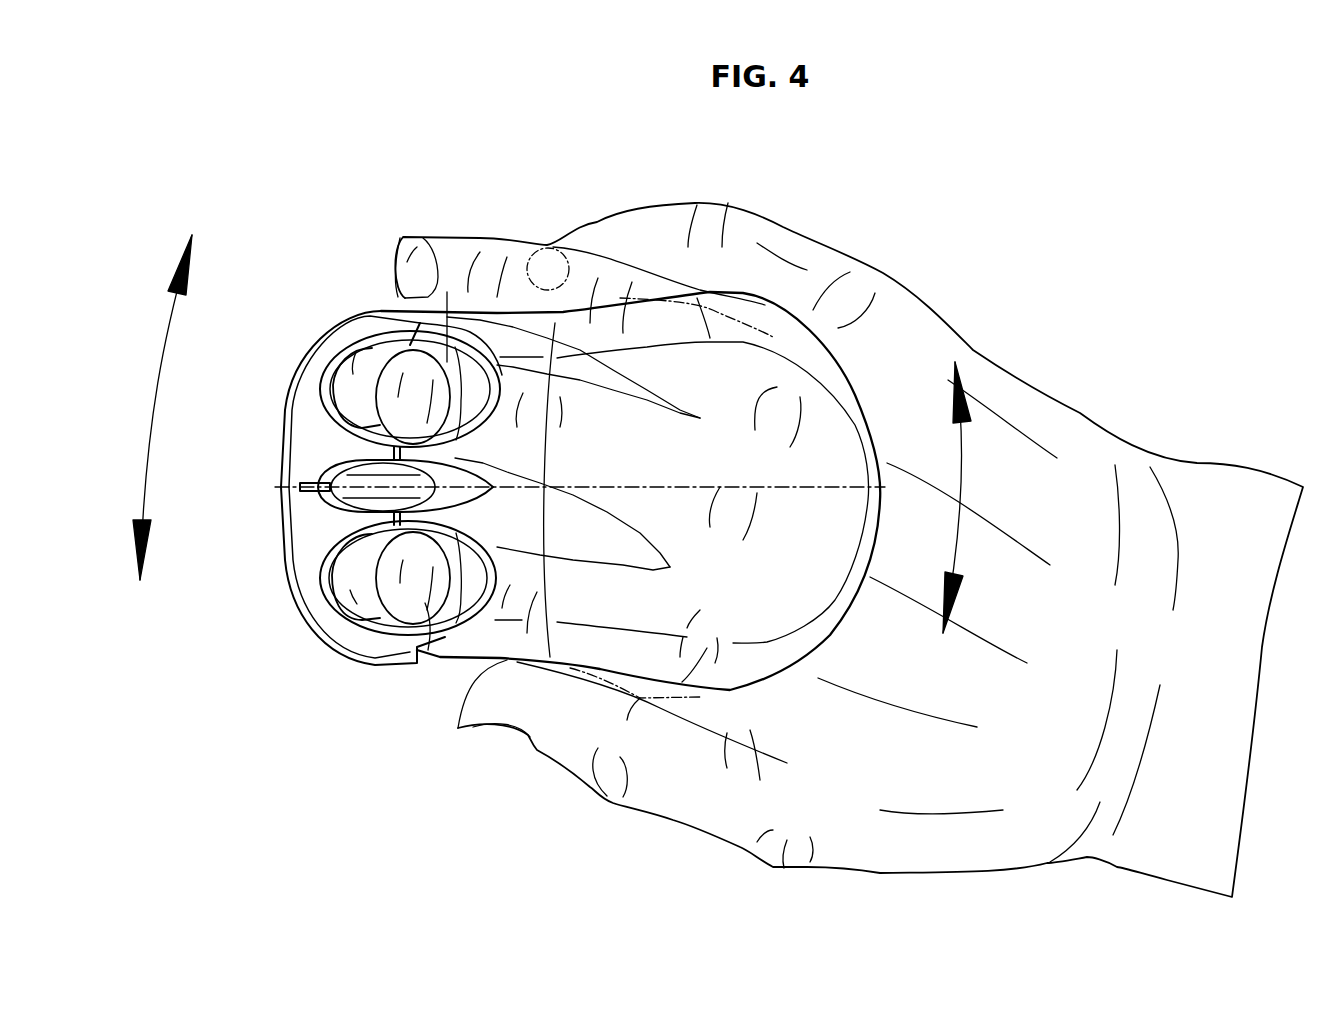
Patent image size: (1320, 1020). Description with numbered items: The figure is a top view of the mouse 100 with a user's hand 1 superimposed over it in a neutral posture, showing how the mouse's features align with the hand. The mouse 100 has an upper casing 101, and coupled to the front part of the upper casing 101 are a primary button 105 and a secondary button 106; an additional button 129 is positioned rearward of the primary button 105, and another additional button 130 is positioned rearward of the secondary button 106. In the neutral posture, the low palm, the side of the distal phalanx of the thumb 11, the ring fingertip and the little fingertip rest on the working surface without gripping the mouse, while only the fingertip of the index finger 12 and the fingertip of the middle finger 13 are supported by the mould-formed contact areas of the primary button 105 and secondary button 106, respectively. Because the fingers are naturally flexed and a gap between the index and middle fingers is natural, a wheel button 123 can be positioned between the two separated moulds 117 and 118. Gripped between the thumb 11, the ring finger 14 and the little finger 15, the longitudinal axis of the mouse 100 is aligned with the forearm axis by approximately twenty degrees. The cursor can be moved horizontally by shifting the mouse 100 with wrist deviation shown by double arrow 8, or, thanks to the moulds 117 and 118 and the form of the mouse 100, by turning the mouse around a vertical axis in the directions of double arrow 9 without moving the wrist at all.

The user's hand 1 is at (848, 523).
The double arrow 8 is at (154, 407).
The double arrow 9 is at (964, 497).
The thumb 11 is at (503, 740).
The index finger 12 is at (368, 600).
The middle finger 13 is at (380, 365).
The ring finger 14 is at (394, 307).
The little finger 15 is at (577, 240).
The mouse 100 is at (532, 457).
The upper casing 101 is at (740, 390).
The primary button 105 is at (350, 647).
The secondary button 106 is at (357, 330).
The mould 117 is at (313, 588).
The mould 118 is at (355, 379).
The wheel button 123 is at (335, 492).
The additional button 129 is at (428, 650).
The additional button 130 is at (447, 292).